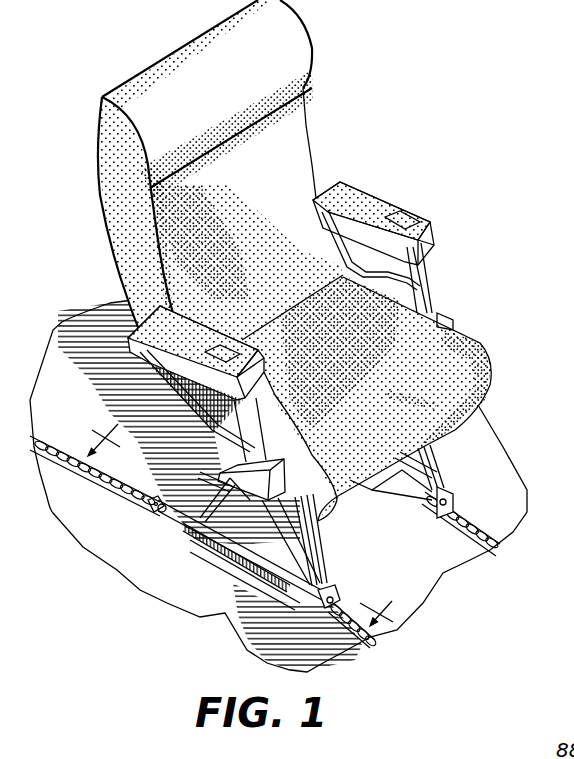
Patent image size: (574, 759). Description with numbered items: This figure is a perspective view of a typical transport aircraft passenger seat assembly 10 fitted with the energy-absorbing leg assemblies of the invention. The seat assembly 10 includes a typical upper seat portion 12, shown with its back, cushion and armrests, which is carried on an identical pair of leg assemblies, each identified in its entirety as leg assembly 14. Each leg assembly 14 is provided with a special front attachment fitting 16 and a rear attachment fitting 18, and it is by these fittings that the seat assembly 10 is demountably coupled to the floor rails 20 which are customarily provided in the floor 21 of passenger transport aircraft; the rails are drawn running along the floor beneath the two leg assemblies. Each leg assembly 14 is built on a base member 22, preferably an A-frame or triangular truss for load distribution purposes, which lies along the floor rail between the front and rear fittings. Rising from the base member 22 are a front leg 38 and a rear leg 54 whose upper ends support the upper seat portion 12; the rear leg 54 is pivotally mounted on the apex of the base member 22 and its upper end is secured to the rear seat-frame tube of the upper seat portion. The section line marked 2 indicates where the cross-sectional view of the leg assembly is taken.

The seat assembly 10 is at (295, 260).
The upper seat portion 12 is at (445, 286).
The leg assembly 14 is at (452, 460).
The front attachment fitting 16 is at (312, 640).
The rear attachment fitting 18 is at (146, 530).
The floor rails 20 is at (78, 432).
The floor 21 is at (88, 538).
The base member 22 is at (197, 558).
The front leg 38 is at (323, 564).
The rear leg 54 is at (206, 470).
The section line 2 is at (247, 521).